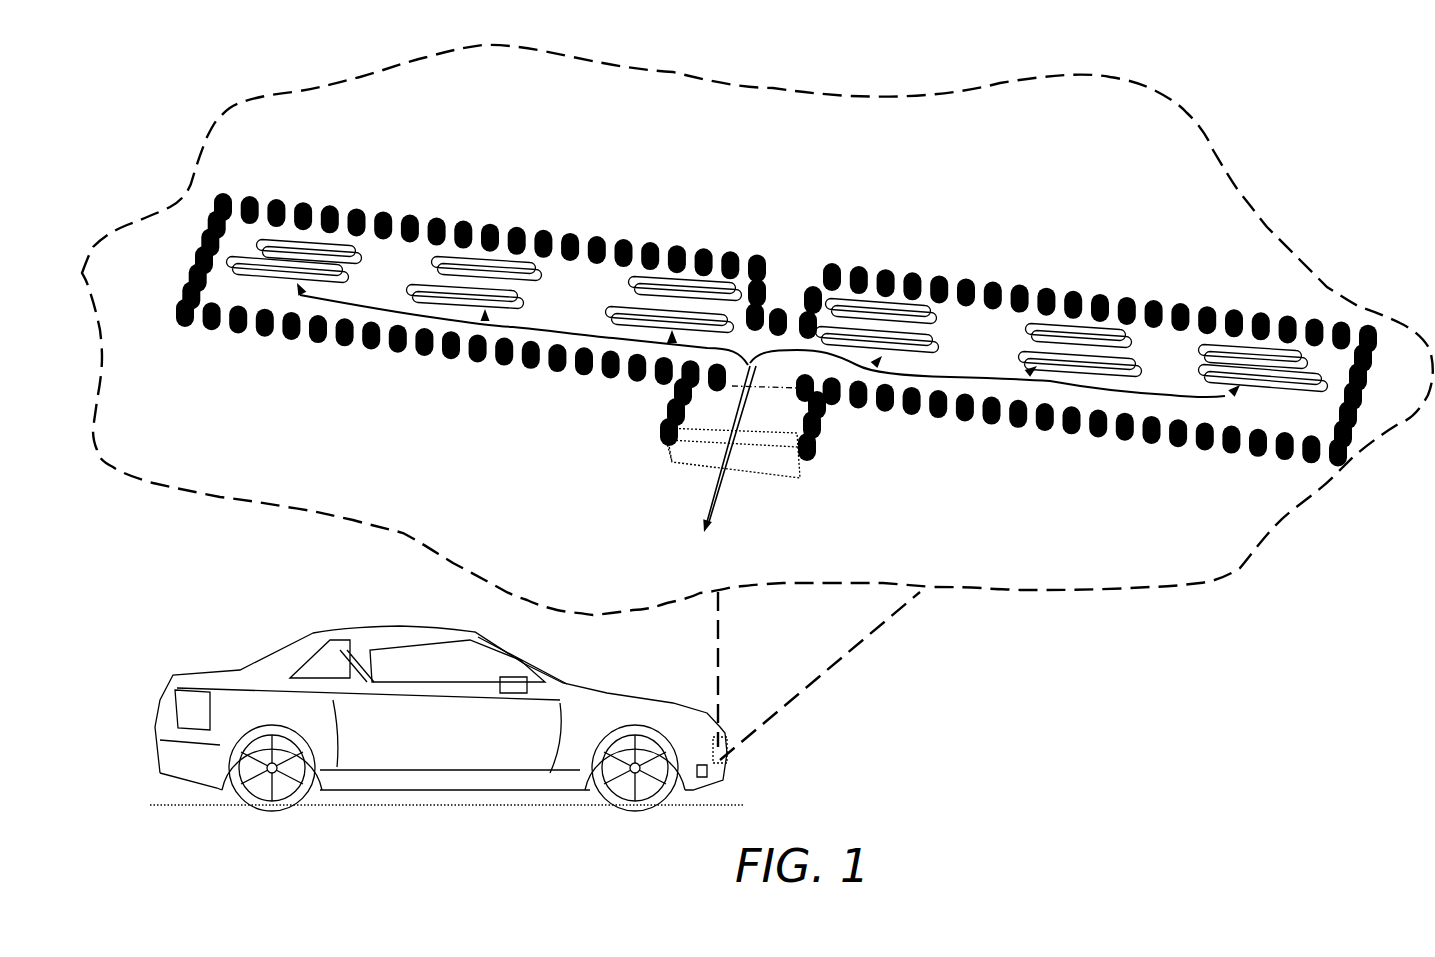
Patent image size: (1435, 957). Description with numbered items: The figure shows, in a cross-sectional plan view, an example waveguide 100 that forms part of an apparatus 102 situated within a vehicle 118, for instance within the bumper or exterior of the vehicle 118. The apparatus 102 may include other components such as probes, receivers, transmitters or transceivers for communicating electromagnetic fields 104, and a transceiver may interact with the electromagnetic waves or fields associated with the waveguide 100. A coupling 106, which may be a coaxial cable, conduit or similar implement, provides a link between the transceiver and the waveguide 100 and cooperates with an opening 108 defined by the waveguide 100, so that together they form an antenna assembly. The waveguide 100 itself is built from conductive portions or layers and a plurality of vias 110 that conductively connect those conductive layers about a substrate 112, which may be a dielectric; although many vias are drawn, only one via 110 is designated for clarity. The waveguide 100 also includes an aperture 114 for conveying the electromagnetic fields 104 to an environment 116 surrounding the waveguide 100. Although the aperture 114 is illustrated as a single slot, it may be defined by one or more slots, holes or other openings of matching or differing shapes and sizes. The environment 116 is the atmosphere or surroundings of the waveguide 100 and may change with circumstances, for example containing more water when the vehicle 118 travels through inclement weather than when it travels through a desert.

The waveguide 100 is at (776, 343).
The apparatus 102 is at (718, 767).
The electromagnetic fields 104 is at (720, 490).
The coupling 106 is at (646, 458).
The opening 108 is at (760, 392).
The via 110 is at (820, 430).
The substrate 112 is at (940, 337).
The aperture 114 is at (514, 298).
The environment 116 is at (815, 722).
The vehicle 118 is at (471, 715).